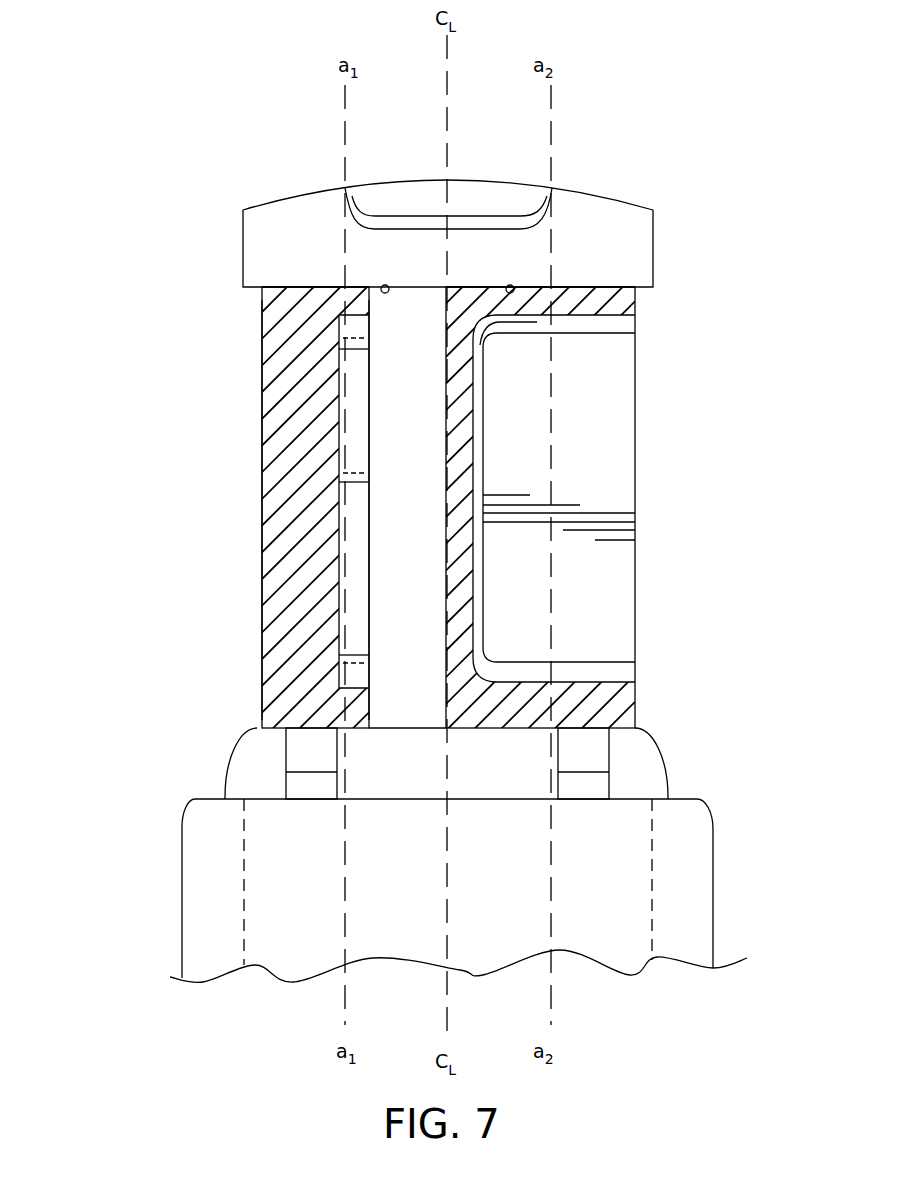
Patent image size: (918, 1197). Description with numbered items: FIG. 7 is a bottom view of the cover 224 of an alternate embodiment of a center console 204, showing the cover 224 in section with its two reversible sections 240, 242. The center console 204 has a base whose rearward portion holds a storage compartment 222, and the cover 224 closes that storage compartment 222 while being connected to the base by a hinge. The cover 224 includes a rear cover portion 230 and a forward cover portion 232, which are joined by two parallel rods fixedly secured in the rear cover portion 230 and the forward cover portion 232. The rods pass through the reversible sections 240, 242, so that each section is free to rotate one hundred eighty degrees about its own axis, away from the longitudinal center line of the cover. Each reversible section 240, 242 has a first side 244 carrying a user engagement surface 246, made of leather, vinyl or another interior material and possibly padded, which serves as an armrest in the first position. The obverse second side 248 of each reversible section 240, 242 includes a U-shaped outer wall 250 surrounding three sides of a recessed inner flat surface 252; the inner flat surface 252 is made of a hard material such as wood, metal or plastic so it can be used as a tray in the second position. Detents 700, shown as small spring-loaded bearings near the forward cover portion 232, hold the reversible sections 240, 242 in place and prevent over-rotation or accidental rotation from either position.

The center console 204 is at (690, 929).
The storage compartment 222 is at (628, 892).
The cover 224 is at (168, 568).
The rear cover portion 230 is at (645, 770).
The forward cover portion 232 is at (636, 238).
The reversible section 240 is at (288, 380).
The reversible section 242 is at (620, 437).
The first side 244 is at (262, 468).
The user engagement surface 246 is at (290, 652).
The obverse second side 248 is at (603, 569).
The outer wall 250 is at (343, 302).
The inner flat surface 252 is at (607, 470).
The detent 700 is at (385, 287).